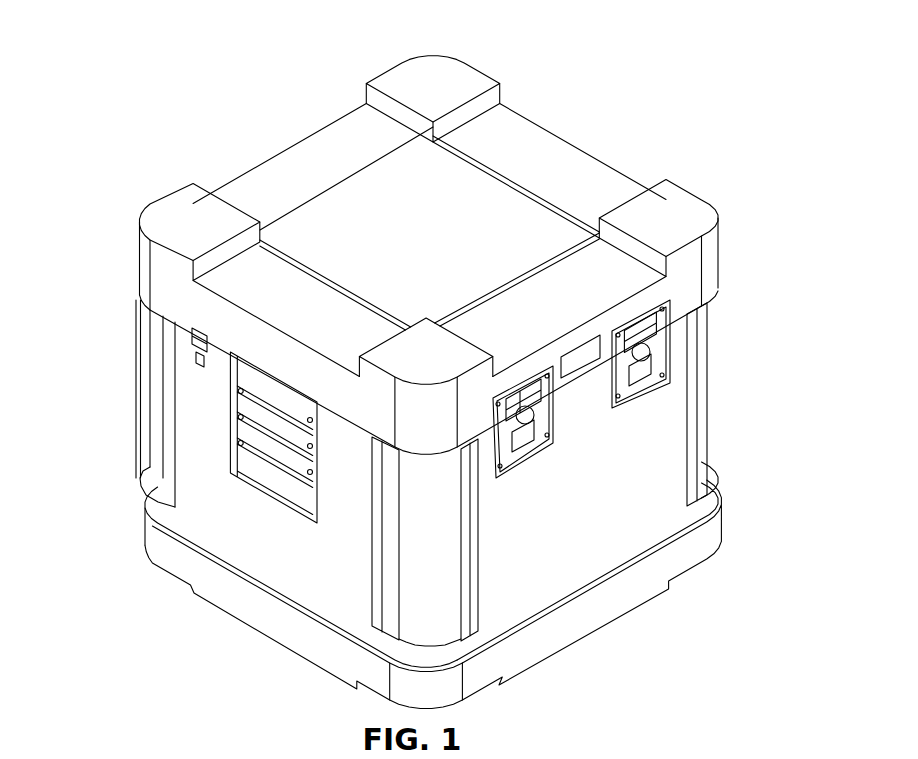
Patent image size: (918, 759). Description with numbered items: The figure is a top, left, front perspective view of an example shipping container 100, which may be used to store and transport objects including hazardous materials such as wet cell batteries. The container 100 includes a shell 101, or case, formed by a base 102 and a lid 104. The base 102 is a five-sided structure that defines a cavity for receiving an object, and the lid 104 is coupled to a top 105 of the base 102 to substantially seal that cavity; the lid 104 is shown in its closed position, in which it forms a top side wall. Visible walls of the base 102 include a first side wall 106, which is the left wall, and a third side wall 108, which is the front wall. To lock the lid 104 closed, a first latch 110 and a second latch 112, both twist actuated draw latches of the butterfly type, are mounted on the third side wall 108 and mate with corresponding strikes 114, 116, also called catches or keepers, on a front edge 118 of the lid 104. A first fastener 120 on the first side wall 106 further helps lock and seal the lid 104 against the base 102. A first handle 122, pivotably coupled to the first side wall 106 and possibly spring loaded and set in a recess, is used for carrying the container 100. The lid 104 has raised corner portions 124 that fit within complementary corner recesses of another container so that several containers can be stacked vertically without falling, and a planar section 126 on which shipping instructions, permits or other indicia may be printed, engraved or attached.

The shipping container 100 is at (154, 36).
The shell 101 is at (104, 226).
The base 102 is at (198, 407).
The lid 104 is at (488, 208).
The top 105 is at (178, 326).
The first side wall 106 is at (233, 517).
The third side wall 108 is at (620, 508).
The first latch 110 is at (525, 435).
The second latch 112 is at (642, 367).
The strike 114 is at (517, 395).
The strike 116 is at (633, 323).
The front edge 118 is at (675, 293).
The first fastener 120 is at (193, 345).
The first handle 122 is at (252, 452).
The raised corner portions 124 is at (188, 218).
The planar section 126 is at (377, 210).